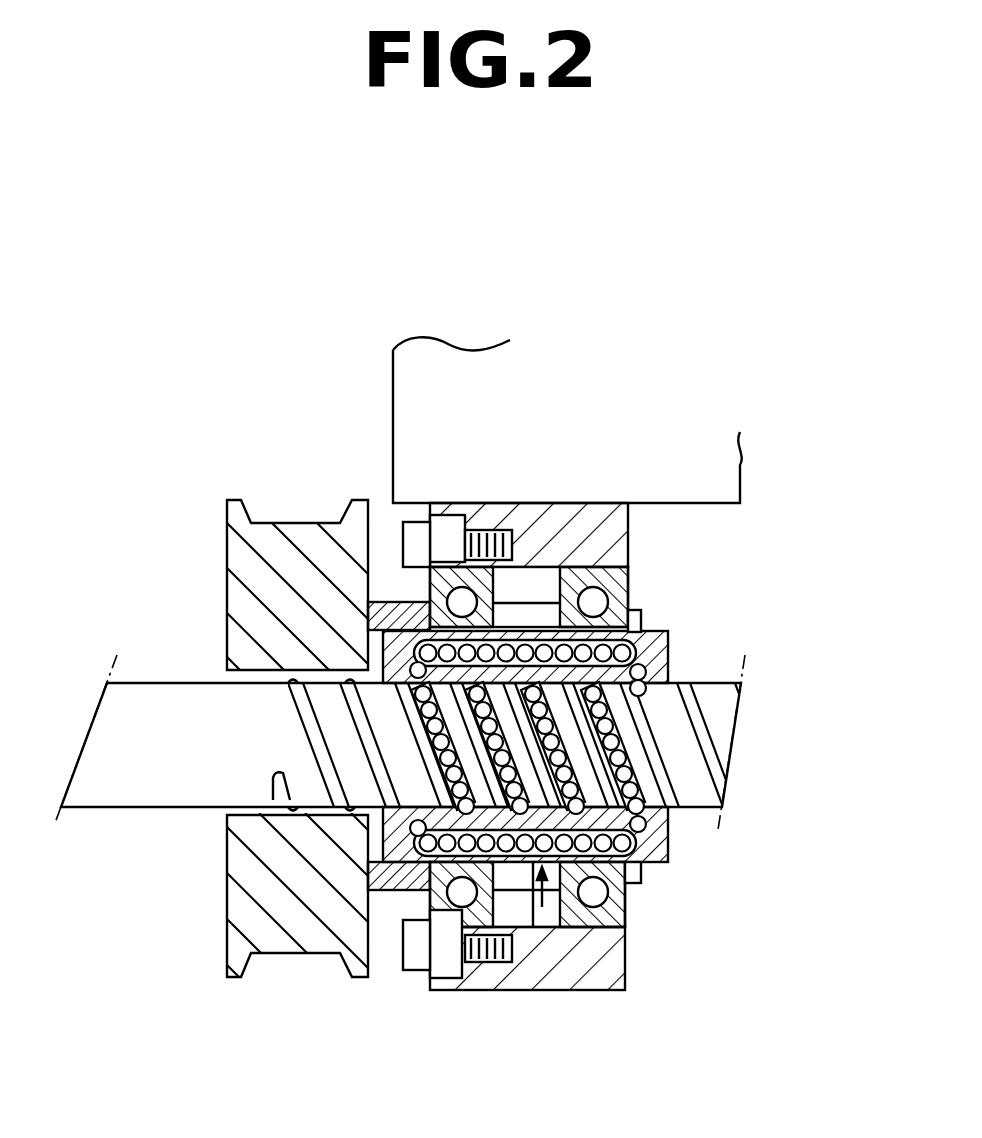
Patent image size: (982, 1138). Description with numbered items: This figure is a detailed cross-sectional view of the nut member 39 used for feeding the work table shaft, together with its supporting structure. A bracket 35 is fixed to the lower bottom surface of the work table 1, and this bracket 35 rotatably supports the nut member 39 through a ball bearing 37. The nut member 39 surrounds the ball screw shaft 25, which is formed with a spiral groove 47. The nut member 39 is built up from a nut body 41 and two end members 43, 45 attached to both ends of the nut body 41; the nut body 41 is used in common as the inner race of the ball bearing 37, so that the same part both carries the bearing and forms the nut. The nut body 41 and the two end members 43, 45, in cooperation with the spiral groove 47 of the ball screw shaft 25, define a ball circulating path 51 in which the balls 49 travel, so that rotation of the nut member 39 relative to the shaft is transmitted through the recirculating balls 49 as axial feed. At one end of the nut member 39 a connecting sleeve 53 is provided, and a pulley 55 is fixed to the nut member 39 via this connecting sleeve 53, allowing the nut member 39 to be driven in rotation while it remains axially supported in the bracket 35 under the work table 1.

The work table 1 is at (415, 383).
The ball screw shaft 25 is at (725, 687).
The bracket 35 is at (612, 533).
The ball bearing 37 is at (625, 898).
The nut member 39 is at (556, 900).
The nut body 41 is at (633, 600).
The end member 43 is at (663, 842).
The end member 45 is at (388, 890).
The spiral groove 47 is at (677, 760).
The ball 49 is at (645, 780).
The ball circulating path 51 is at (527, 905).
The connecting sleeve 53 is at (386, 600).
The pulley 55 is at (287, 922).